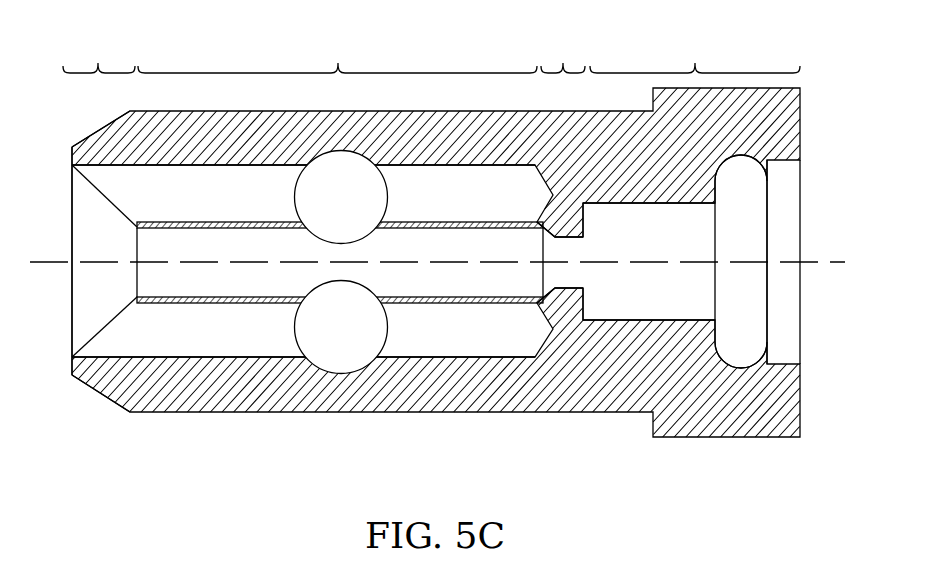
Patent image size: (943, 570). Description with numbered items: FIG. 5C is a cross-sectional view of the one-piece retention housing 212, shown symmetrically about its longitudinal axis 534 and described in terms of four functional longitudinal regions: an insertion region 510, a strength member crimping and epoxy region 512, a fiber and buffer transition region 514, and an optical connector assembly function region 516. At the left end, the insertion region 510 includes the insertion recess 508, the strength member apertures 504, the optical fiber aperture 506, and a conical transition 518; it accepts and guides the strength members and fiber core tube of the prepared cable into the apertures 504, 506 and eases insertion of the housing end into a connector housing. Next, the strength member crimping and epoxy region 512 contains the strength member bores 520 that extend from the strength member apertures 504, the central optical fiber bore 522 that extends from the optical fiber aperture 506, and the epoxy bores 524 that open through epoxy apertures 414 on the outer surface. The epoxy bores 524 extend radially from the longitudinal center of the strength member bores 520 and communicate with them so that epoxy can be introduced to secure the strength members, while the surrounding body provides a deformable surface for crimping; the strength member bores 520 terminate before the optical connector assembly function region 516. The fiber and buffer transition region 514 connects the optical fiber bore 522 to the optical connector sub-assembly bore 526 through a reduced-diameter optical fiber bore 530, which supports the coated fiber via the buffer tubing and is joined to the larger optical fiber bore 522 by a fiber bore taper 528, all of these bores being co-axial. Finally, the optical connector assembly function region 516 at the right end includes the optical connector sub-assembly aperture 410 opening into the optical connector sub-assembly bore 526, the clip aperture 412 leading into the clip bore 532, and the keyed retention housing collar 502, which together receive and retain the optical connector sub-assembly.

The one-piece retention housing 212 is at (323, 476).
The optical connector sub-assembly aperture 410 is at (802, 277).
The clip aperture 412 is at (745, 369).
The epoxy apertures 414 is at (370, 235).
The keyed retention housing collar 502 is at (657, 437).
The strength member apertures 504 is at (107, 200).
The optical fiber aperture 506 is at (137, 243).
The insertion recess 508 is at (83, 308).
The insertion region 510 is at (99, 55).
The strength member crimping and epoxy region 512 is at (337, 55).
The fiber and buffer transition region 514 is at (561, 55).
The optical connector assembly function region 516 is at (695, 55).
The conical transition 518 is at (108, 126).
The strength member bores 520 is at (186, 204).
The optical fiber bore 522 is at (452, 249).
The epoxy bores 524 is at (327, 198).
The optical connector sub-assembly bore 526 is at (675, 298).
The fiber bore taper 528 is at (581, 290).
The reduced-diameter optical fiber bore 530 is at (570, 276).
The clip bore 532 is at (750, 180).
The longitudinal axis 534 is at (807, 262).